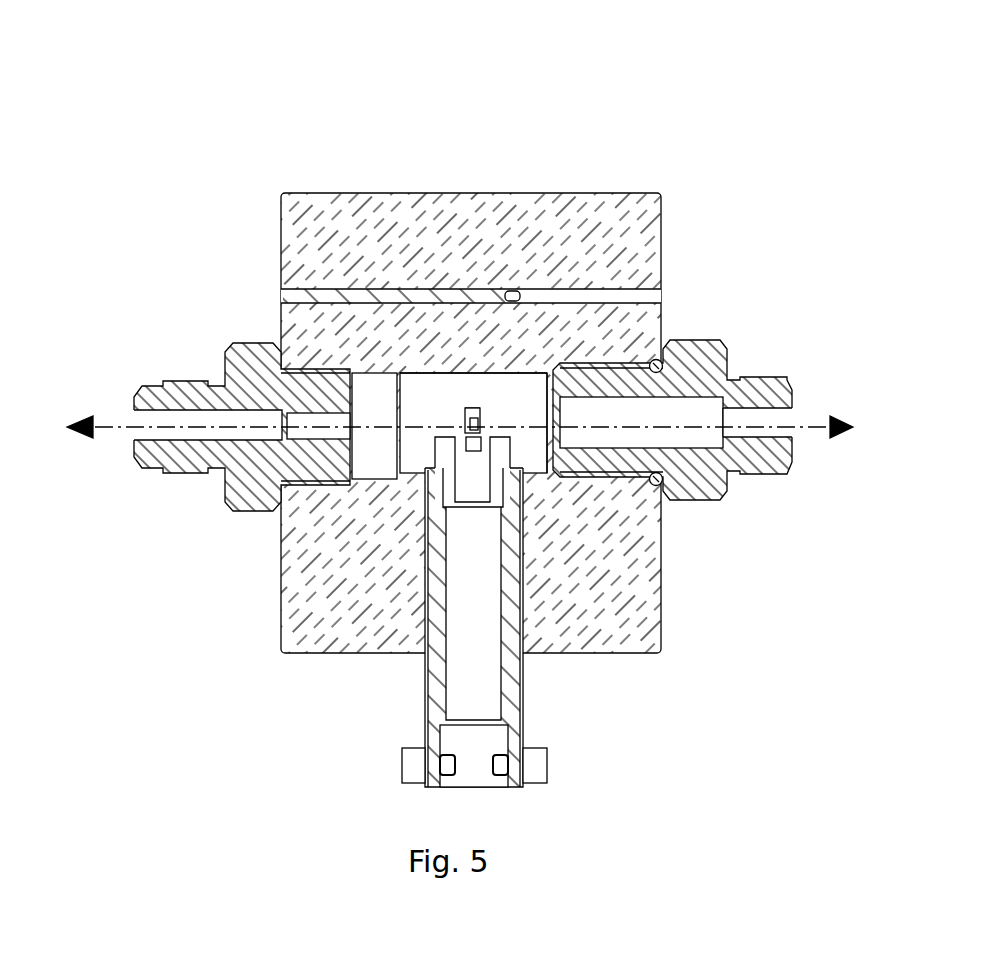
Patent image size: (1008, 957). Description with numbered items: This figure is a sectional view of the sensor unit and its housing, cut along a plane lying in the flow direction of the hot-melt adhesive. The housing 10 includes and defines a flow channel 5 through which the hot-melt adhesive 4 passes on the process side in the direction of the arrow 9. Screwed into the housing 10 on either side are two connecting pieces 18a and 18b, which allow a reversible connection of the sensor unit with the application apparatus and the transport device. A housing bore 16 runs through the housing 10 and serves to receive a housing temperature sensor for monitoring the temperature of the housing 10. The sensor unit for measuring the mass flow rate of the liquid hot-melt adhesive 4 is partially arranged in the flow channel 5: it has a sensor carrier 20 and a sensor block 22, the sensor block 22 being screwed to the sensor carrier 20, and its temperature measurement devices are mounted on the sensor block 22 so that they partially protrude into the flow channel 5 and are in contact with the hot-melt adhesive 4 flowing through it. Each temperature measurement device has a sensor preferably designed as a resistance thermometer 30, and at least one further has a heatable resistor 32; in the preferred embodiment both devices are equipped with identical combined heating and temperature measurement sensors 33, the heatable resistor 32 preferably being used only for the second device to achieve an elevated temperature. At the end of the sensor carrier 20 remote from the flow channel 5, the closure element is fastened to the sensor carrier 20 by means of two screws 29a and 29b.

The hot-melt adhesive 4 is at (432, 400).
The flow channel 5 is at (532, 386).
The arrow 9 is at (80, 412).
The housing 10 is at (438, 205).
The housing bore 16 is at (312, 302).
The connecting piece 18a is at (747, 393).
The connecting piece 18b is at (197, 395).
The sensor carrier 20 is at (510, 687).
The sensor block 22 is at (481, 433).
The screw 29a is at (413, 763).
The screw 29b is at (532, 765).
The resistance thermometer 30 is at (480, 428).
The heatable resistor 32 is at (480, 411).
The combined heating and temperature measurement sensor 33 is at (473, 458).